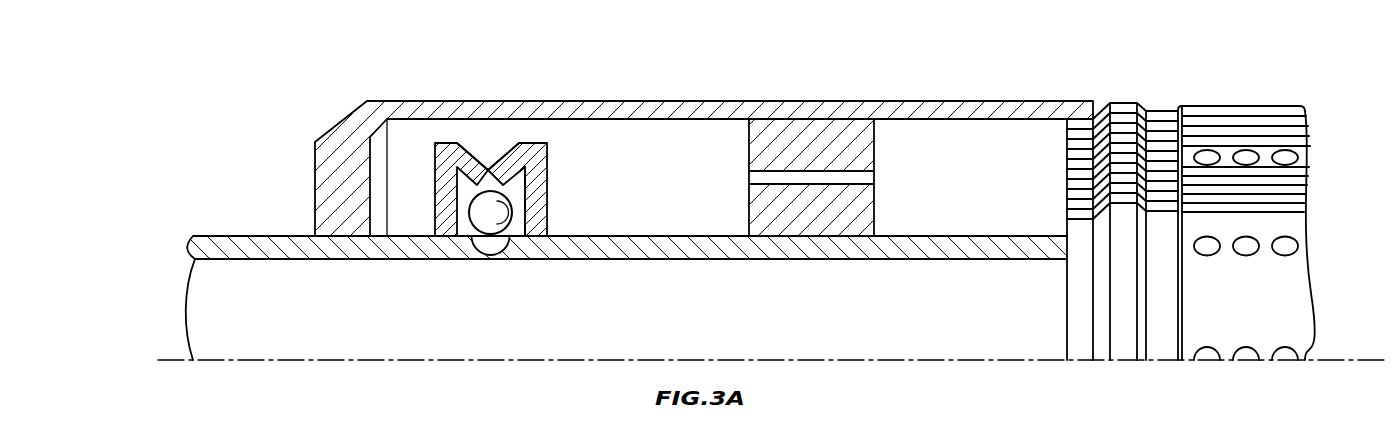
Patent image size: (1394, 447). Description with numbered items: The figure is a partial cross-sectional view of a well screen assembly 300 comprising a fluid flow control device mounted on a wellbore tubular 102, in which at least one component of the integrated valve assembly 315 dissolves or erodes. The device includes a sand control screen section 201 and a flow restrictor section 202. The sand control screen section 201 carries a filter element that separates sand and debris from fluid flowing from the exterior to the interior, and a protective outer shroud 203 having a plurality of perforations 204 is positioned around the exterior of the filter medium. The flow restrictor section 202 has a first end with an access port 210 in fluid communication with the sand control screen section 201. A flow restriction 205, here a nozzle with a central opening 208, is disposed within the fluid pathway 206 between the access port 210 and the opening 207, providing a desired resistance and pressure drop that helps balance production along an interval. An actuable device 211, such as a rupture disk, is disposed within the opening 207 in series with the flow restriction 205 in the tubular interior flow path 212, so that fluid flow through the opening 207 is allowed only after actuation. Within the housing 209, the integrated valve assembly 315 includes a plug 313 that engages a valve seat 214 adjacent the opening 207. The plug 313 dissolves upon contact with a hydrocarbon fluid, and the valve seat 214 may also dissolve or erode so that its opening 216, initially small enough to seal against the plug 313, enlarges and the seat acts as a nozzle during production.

The connector assembly 300 is at (251, 96).
The wellbore tubular 102 is at (260, 260).
The sand control screen section 201 is at (1210, 104).
The flow restrictor section 202 is at (1077, 95).
The protective outer shroud 203 is at (1236, 117).
The perforations 204 is at (1279, 150).
The flow restriction 205 is at (876, 143).
The fluid pathway 206 is at (710, 214).
The opening 207 is at (483, 261).
The central opening 208 is at (867, 177).
The housing 209 is at (825, 102).
The access port 210 is at (1066, 160).
The actuable device 211 is at (498, 257).
The tubular interior flow path 212 is at (810, 327).
The valve seat 214 is at (435, 192).
The opening 216 is at (486, 168).
The plug 313 is at (498, 202).
The integrated valve assembly 315 is at (554, 161).